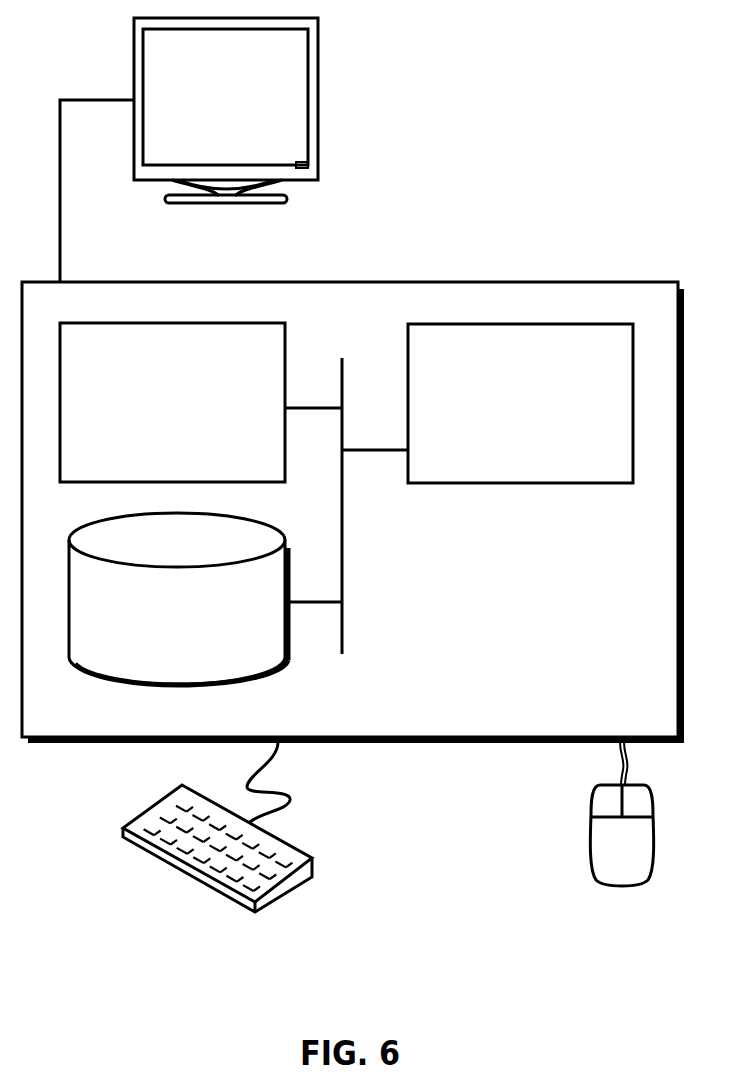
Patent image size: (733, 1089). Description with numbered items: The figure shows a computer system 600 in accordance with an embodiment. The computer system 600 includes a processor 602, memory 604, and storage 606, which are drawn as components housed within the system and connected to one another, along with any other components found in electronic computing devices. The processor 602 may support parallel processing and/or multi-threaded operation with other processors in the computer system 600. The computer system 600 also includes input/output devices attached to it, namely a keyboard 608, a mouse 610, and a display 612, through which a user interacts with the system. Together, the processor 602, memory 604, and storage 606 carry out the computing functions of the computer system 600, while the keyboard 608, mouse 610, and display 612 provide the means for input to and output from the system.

The computer system 600 is at (397, 250).
The processor 602 is at (502, 418).
The memory 604 is at (152, 415).
The storage 606 is at (159, 628).
The keyboard 608 is at (143, 847).
The mouse 610 is at (601, 858).
The display 612 is at (189, 150).